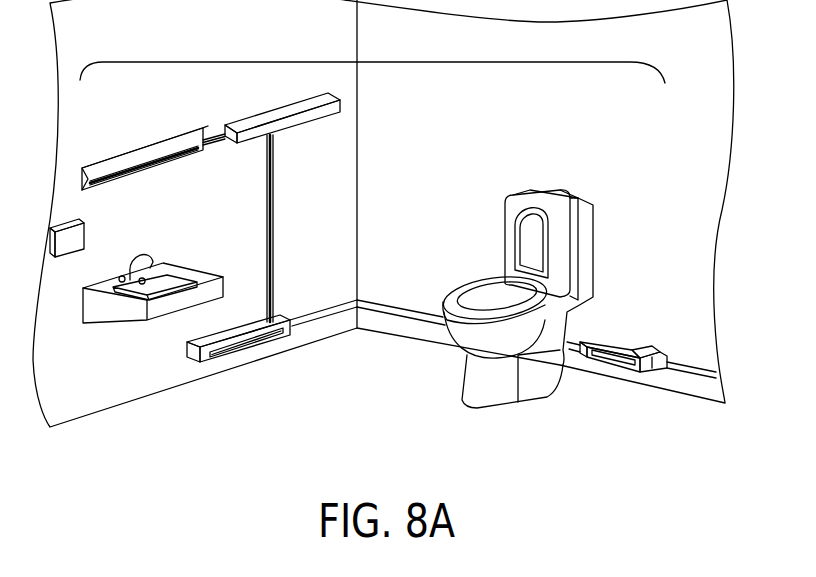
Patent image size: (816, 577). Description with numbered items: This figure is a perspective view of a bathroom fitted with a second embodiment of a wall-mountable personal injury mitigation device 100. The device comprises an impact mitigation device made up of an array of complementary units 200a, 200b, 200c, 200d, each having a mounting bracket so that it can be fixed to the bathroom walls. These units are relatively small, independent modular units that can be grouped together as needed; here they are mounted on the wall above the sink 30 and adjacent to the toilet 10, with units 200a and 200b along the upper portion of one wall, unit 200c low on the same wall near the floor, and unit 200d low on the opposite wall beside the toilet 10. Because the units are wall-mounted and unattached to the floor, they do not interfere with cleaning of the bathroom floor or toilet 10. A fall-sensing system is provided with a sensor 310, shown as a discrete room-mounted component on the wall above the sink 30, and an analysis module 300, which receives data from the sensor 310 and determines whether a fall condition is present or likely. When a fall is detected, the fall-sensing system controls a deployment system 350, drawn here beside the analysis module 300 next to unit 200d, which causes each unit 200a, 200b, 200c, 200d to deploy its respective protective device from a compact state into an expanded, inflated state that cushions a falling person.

The wall-mountable personal injury mitigation device 100 is at (385, 62).
The impact mitigation device unit 200a is at (127, 157).
The impact mitigation device unit 200b is at (308, 113).
The impact mitigation device unit 200c is at (205, 357).
The impact mitigation device unit 200d is at (631, 356).
The analysis module 300 is at (640, 368).
The deployment system 350 is at (652, 368).
The sensor 310 is at (84, 237).
The sink 30 is at (100, 308).
The toilet 10 is at (490, 387).